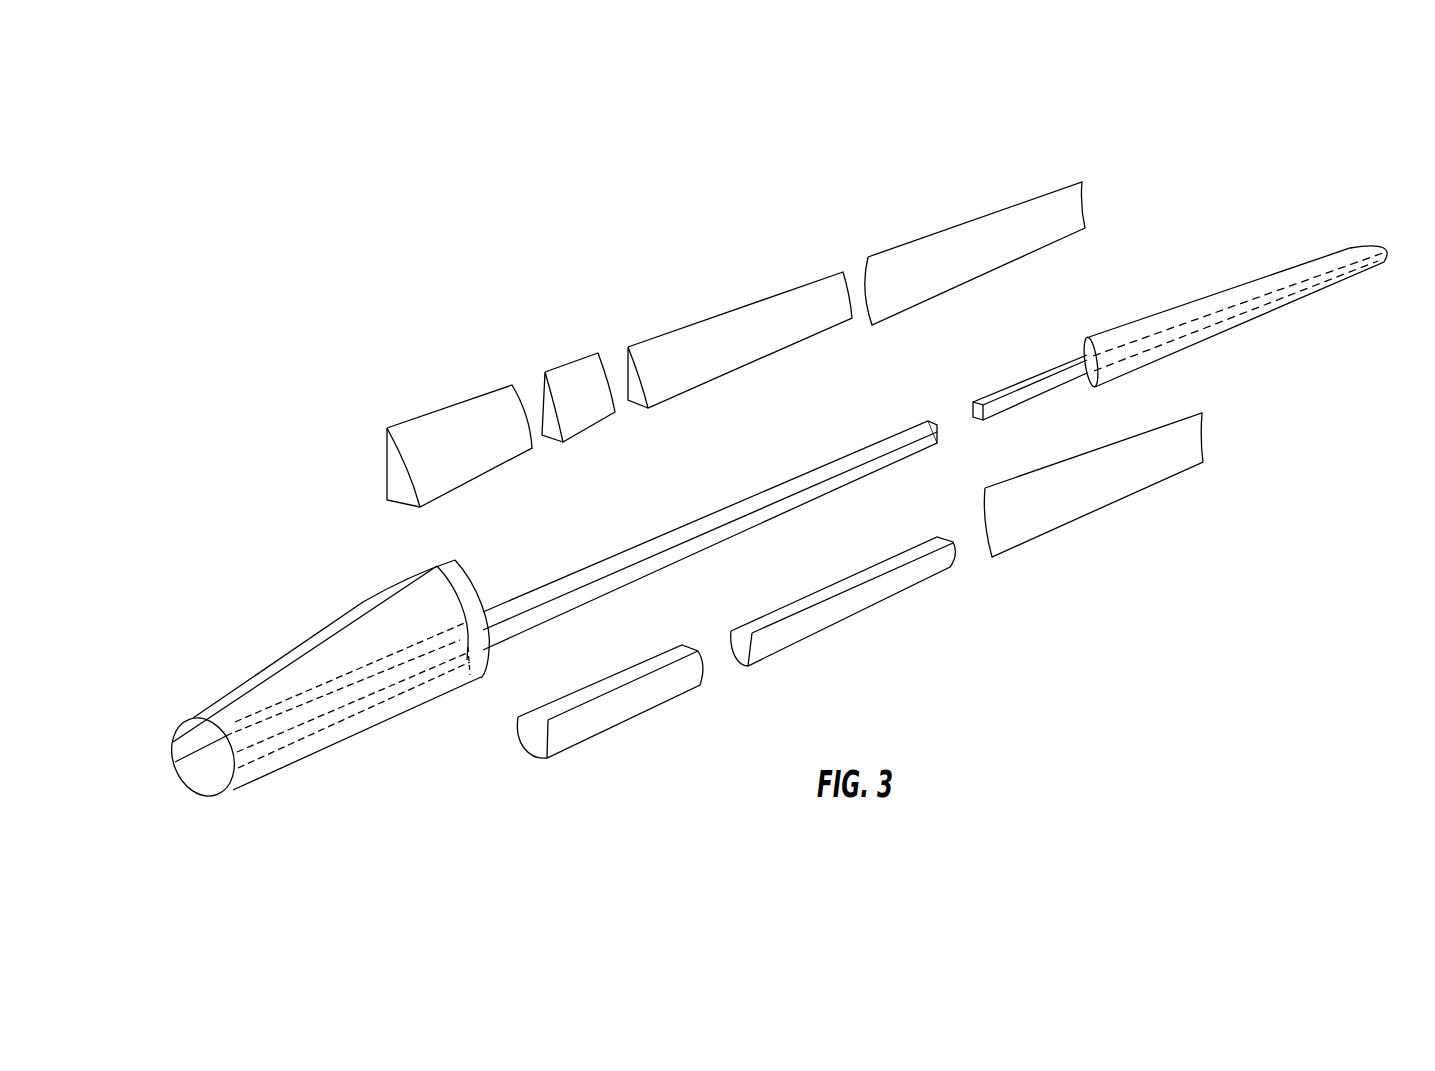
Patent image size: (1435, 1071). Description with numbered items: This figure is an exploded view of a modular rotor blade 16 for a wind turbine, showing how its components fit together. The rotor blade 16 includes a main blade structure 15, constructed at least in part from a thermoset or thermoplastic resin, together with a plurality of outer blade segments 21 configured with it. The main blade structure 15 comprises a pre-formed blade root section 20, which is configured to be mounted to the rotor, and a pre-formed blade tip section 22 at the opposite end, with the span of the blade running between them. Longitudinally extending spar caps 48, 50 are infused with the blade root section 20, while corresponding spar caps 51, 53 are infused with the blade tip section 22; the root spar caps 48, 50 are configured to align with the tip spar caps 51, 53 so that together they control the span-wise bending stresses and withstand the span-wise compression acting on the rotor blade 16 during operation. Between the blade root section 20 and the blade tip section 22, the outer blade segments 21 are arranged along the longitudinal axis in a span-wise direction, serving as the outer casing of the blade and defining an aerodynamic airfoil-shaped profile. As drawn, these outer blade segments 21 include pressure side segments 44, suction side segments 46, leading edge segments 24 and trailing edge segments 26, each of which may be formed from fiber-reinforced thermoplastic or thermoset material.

The main blade structure 15 is at (322, 625).
The rotor blade 16 is at (1148, 192).
The blade root section 20 is at (327, 752).
The outer blade segment 21 is at (410, 410).
The blade tip section 22 is at (1292, 303).
The leading edge segment 24 is at (638, 715).
The trailing edge segment 26 is at (465, 403).
The pressure side segment 44 is at (957, 223).
The suction side segment 46 is at (1103, 507).
The spar cap 48 is at (550, 588).
The spar cap 50 is at (702, 540).
The spar cap 51 is at (975, 400).
The spar cap 53 is at (1022, 392).